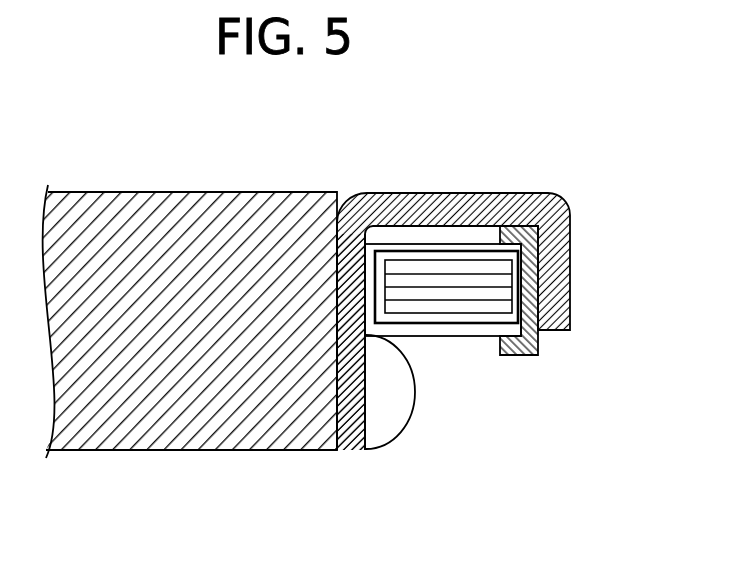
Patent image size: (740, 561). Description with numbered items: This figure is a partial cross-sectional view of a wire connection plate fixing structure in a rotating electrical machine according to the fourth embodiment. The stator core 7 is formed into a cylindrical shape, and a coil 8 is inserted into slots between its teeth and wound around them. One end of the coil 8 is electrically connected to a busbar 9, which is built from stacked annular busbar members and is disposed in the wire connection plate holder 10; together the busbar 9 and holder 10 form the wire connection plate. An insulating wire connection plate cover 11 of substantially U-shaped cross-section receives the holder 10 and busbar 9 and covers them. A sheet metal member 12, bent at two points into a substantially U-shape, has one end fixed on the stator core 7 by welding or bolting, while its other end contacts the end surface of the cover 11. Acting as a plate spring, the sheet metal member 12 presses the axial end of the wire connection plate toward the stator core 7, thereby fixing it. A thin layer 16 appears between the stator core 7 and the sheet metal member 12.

The stator core 7 is at (168, 192).
The thin layer 16 is at (333, 283).
The sheet metal member 12 is at (571, 236).
The busbar 9 is at (516, 263).
The wire connection plate holder 10 is at (482, 337).
The wire connection plate cover 11 is at (538, 342).
The coil 8 is at (413, 408).